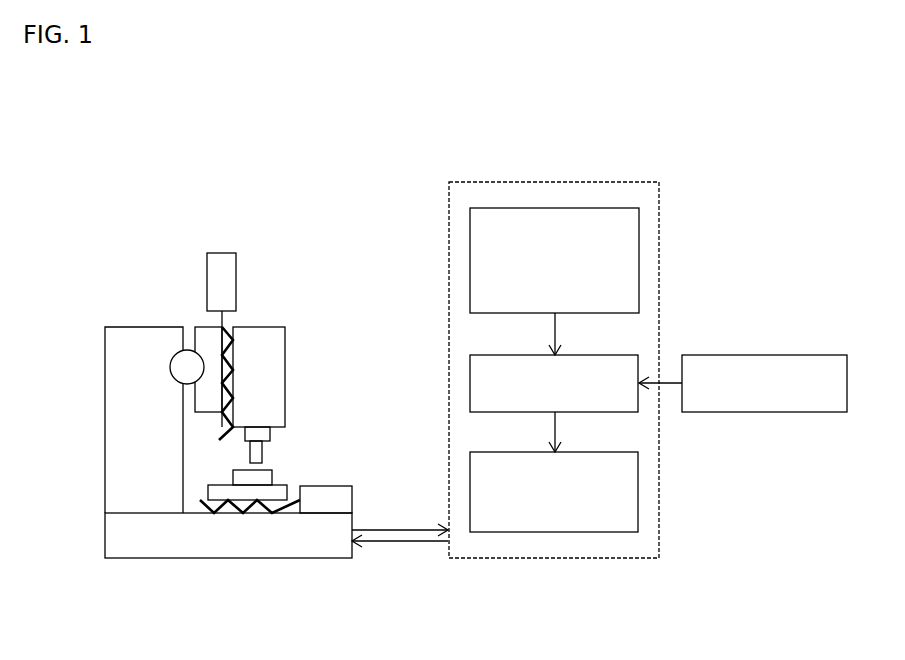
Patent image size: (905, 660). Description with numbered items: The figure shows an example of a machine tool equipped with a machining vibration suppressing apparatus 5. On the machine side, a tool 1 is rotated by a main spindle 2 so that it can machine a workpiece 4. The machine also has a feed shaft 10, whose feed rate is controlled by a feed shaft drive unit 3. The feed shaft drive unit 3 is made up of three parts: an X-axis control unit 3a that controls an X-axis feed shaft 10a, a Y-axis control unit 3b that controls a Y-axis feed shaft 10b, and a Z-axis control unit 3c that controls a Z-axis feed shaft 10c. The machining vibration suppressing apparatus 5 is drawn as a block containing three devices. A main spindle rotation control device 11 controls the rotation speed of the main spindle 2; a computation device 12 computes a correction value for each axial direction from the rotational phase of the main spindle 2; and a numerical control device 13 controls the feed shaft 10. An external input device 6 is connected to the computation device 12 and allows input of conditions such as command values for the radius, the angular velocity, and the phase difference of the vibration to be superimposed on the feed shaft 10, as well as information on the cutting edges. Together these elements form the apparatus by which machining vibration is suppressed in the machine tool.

The tool 1 is at (267, 450).
The main spindle 2 is at (283, 432).
The feed shaft drive unit 3 is at (243, 439).
The X-axis control unit 3a is at (178, 362).
The Y-axis control unit 3b is at (352, 503).
The Z-axis control unit 3c is at (223, 280).
The workpiece 4 is at (275, 475).
The machining vibration suppressing apparatus 5 is at (619, 182).
The external input device 6 is at (798, 355).
The feed shaft 10 is at (221, 452).
The X-axis feed shaft 10a is at (124, 326).
The Y-axis feed shaft 10b is at (253, 513).
The Z-axis feed shaft 10c is at (235, 363).
The main spindle rotation control device 11 is at (639, 225).
The computation device 12 is at (623, 355).
The numerical control device 13 is at (638, 500).